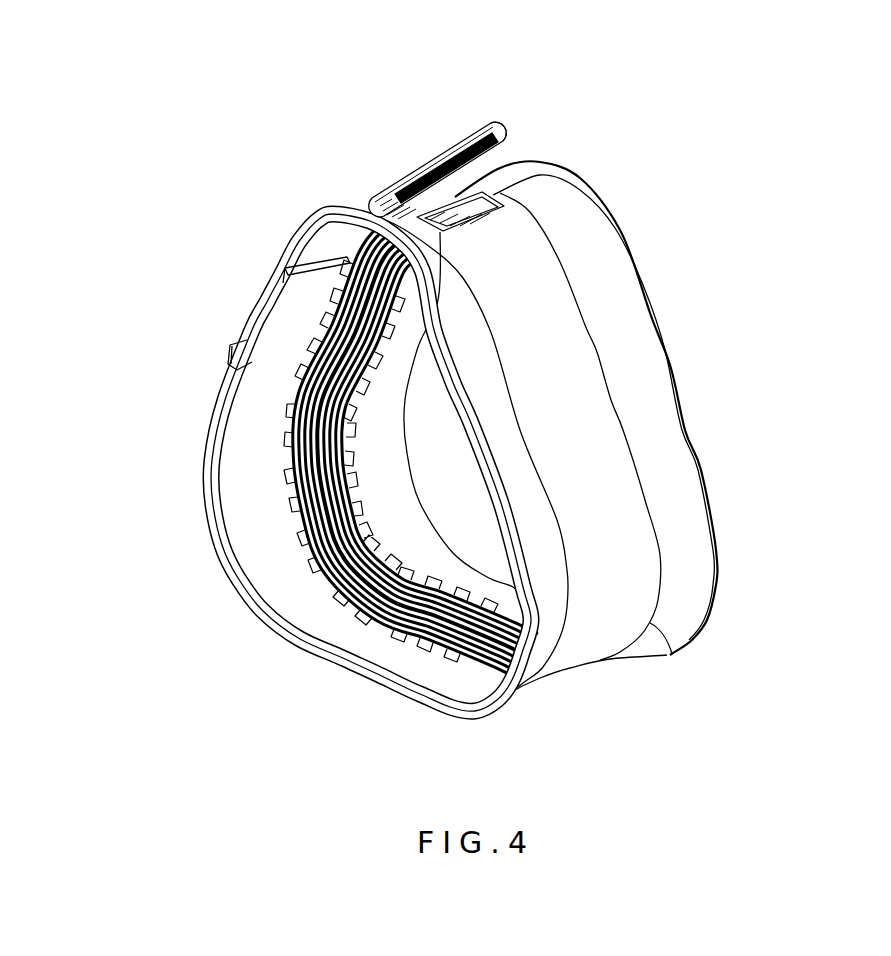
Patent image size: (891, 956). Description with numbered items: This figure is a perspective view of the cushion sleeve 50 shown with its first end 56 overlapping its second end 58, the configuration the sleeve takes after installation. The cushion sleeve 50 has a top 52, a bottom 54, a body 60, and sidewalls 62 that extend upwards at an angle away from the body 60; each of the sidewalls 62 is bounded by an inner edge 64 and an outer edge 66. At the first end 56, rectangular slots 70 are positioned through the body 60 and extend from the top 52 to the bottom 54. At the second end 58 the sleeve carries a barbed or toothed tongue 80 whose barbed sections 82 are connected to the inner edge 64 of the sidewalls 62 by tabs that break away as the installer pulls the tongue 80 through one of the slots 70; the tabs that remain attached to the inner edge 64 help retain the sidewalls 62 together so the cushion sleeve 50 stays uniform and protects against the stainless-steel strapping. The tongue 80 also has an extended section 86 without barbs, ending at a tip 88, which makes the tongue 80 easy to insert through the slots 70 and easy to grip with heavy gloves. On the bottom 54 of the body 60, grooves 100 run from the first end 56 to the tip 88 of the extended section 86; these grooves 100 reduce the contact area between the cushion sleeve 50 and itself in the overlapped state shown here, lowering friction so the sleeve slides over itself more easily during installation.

The cushion sleeve 50 is at (730, 226).
The top 52 is at (570, 422).
The bottom 54 is at (410, 622).
The first end 56 is at (234, 347).
The second end 58 is at (302, 318).
The body 60 is at (620, 512).
The sidewalls 62 is at (685, 602).
The inner edge 64 is at (650, 623).
The outer edge 66 is at (717, 548).
The slots 70 is at (497, 200).
The tongue 80 is at (420, 138).
The barbed sections 82 is at (353, 240).
The extended section 86 is at (420, 167).
The tip 88 is at (500, 127).
The grooves 100 is at (292, 500).